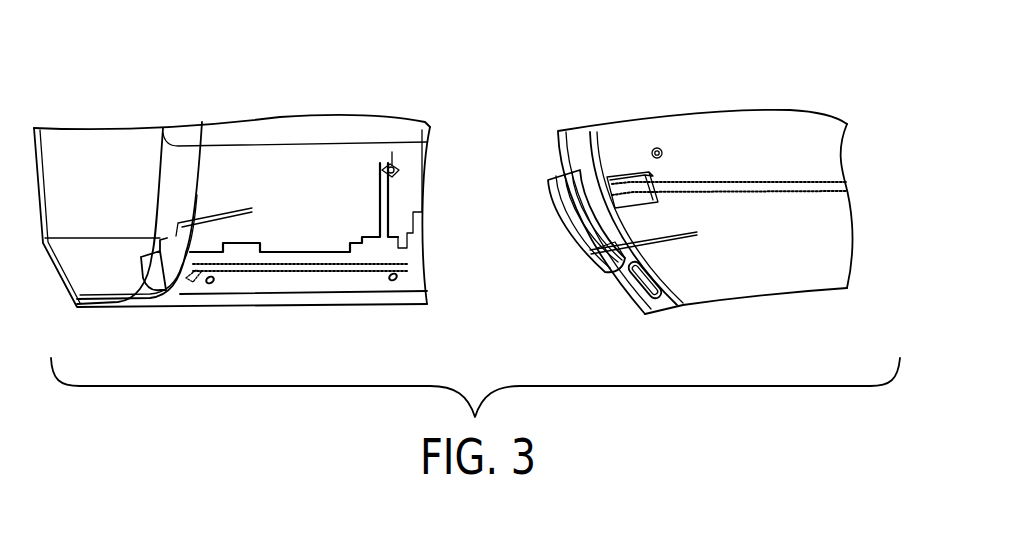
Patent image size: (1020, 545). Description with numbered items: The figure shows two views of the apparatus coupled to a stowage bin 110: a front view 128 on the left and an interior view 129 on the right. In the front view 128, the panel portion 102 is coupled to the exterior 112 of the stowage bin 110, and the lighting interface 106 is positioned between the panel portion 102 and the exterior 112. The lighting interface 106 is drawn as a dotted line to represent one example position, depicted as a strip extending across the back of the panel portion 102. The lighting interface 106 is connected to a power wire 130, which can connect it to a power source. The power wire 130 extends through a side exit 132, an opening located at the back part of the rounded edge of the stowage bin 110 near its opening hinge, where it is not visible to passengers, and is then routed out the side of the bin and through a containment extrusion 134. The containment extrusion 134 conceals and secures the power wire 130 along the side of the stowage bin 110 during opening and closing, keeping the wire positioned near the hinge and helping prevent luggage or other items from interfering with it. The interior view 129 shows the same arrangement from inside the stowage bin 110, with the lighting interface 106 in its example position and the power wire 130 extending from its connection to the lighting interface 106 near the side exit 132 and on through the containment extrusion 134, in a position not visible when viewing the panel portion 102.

The panel portion 102 is at (435, 283).
The lighting interface 106 is at (413, 260).
The stowage bin 110 is at (303, 104).
The exterior 112 is at (257, 153).
The front view 128 is at (143, 95).
The interior view 129 is at (638, 105).
The power wire 130 is at (255, 208).
The side exit 132 is at (183, 284).
The containment extrusion 134 is at (163, 257).